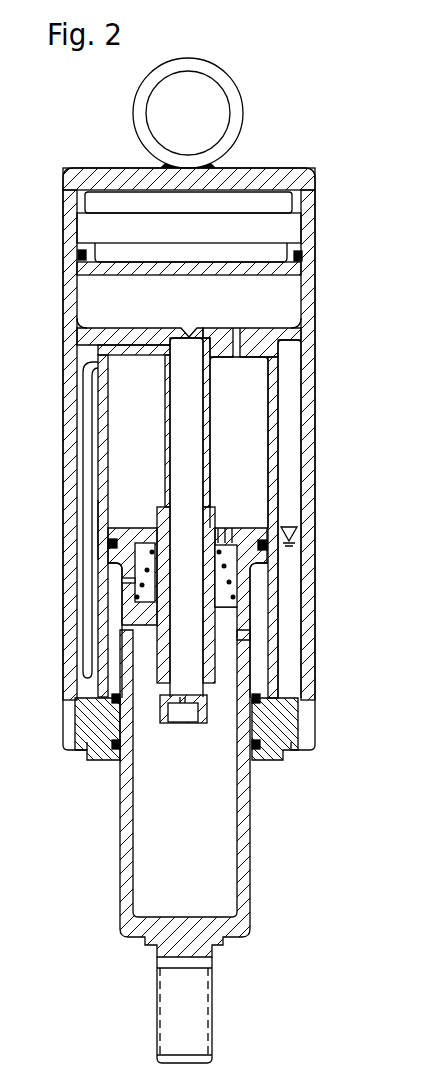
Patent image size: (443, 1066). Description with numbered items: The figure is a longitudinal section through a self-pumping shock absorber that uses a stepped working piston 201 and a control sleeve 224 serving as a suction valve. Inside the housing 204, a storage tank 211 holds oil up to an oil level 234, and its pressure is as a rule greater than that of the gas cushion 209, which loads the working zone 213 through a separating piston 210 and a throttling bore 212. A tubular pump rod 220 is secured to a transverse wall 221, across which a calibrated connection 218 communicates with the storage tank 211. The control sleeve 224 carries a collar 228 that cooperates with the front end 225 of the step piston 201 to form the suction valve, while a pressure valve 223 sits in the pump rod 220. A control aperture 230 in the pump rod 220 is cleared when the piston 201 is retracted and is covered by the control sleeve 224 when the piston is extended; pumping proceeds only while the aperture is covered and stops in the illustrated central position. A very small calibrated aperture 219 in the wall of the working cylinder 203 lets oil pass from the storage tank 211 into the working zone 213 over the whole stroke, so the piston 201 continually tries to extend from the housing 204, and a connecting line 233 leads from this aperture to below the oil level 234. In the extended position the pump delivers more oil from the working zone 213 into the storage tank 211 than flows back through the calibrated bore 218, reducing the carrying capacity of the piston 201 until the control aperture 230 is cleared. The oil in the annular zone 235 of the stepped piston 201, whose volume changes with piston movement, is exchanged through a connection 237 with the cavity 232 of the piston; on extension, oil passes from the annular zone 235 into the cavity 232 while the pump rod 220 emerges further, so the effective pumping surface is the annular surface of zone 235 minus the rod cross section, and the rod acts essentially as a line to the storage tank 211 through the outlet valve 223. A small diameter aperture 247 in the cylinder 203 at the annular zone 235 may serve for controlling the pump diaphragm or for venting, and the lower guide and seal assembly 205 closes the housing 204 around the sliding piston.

The step piston 201 is at (273, 628).
The working cylinder 203 is at (102, 447).
The housing 204 is at (302, 540).
The guide and seal assembly 205 is at (78, 730).
The gas cushion 209 is at (228, 230).
The separating piston 210 is at (293, 258).
The storage tank 211 is at (285, 403).
The throttling bore 212 is at (240, 330).
The working zone 213 is at (248, 380).
The connection 218 is at (141, 330).
The calibrated aperture 219 is at (93, 364).
The pump rod 220 is at (165, 403).
The transverse wall 221 is at (117, 330).
The pressure valve 223 is at (182, 698).
The control sleeve 224 is at (157, 632).
The front end 225 is at (243, 532).
The collar 228 is at (140, 545).
The control aperture 230 is at (205, 685).
The cavity 232 is at (143, 827).
The connecting line 233 is at (86, 669).
The oil level 234 is at (97, 532).
The annular zone 235 is at (113, 674).
The connection 237 is at (123, 581).
The small diameter aperture 247 is at (243, 648).